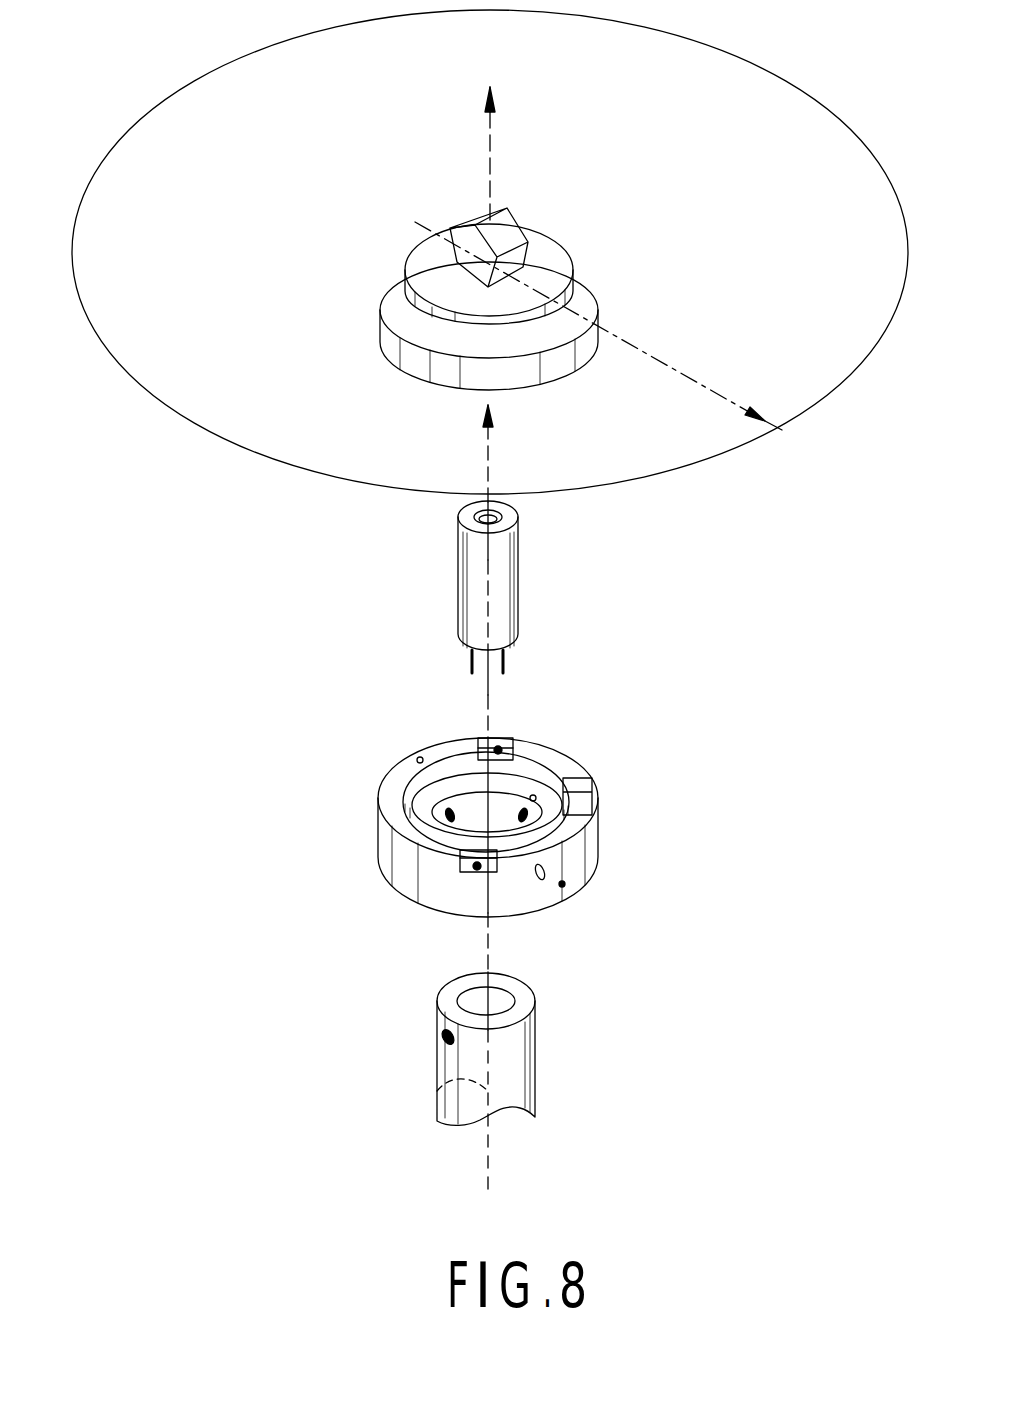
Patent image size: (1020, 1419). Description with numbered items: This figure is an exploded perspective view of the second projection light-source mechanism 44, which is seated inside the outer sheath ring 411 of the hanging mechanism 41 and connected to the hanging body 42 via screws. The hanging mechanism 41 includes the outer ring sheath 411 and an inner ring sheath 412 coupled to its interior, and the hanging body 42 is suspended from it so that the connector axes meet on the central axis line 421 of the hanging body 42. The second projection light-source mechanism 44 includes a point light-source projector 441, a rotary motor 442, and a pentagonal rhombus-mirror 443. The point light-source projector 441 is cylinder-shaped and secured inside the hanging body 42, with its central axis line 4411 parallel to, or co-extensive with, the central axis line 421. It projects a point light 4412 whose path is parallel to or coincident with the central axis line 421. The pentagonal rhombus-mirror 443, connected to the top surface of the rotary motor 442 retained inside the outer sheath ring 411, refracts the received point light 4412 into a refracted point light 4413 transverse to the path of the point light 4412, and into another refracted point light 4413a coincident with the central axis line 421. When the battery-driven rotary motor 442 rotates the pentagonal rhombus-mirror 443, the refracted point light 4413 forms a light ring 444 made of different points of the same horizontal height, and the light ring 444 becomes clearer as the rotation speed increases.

The hanging mechanism 41 is at (495, 810).
The outer ring sheath 411 is at (385, 800).
The inner ring sheath 412 is at (553, 798).
The hanging body 42 is at (491, 1049).
The central axis line of the hanging body 421 is at (437, 1090).
The second projection light-source mechanism 44 is at (471, 258).
The point light-source projector 441 is at (546, 587).
The central axis line of the point light-source projector 4411 is at (488, 558).
The point light 4412 is at (521, 440).
The refracted point light 4413 is at (666, 365).
The refracted point light 4413a is at (490, 158).
The rotary motor 442 is at (383, 343).
The pentagonal rhombus-mirror 443 is at (450, 232).
The light ring 444 is at (896, 195).